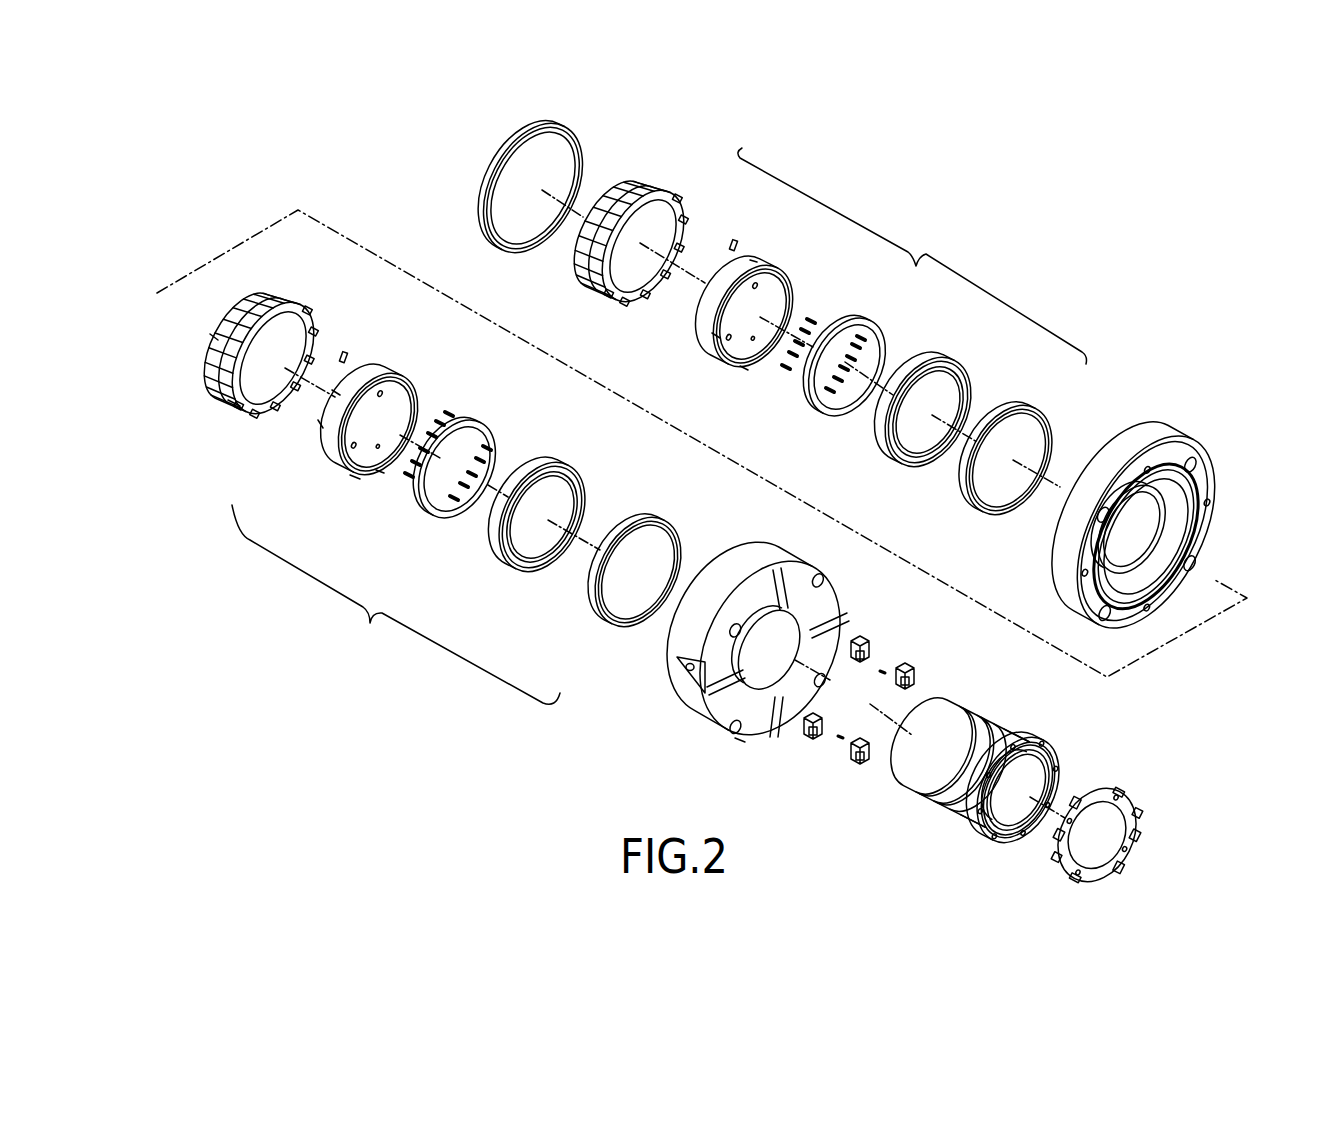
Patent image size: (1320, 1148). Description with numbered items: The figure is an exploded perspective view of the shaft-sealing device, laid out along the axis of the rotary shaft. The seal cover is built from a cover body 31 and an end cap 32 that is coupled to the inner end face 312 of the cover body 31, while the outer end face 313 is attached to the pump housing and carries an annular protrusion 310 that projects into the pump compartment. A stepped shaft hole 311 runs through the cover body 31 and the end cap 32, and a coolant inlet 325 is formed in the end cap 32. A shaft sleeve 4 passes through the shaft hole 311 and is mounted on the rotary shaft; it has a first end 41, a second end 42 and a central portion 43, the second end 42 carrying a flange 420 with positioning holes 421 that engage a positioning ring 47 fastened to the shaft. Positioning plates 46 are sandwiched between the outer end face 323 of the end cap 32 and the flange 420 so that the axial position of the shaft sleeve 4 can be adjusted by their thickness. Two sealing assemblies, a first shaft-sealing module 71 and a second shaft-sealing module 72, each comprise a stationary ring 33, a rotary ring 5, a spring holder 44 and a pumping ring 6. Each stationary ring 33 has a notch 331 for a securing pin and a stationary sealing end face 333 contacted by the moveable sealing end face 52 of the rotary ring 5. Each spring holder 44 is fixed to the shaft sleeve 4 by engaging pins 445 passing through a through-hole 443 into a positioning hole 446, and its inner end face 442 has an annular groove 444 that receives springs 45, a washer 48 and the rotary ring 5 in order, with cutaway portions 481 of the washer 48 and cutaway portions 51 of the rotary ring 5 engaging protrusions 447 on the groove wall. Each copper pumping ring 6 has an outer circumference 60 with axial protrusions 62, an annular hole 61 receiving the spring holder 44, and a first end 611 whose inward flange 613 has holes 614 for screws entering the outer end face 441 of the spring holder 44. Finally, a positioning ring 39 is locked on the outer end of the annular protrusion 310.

The shaft sleeve 4 is at (1013, 741).
The rotary ring 5 is at (565, 473).
The pumping ring 6 is at (250, 305).
The cover body 31 is at (1205, 489).
The end cap 32 is at (833, 598).
The stationary ring 33 is at (658, 526).
The positioning ring 39 is at (490, 171).
The first end 41 is at (943, 702).
The second end 42 is at (961, 813).
The central portion 43 is at (961, 723).
The spring holder 44 is at (372, 367).
The springs 45 is at (826, 296).
The positioning plates 46 is at (859, 770).
The positioning ring 47 is at (455, 412).
The washer 48 is at (478, 423).
The cutaway portions 51 is at (516, 512).
The moveable sealing end face 52 is at (545, 576).
The outer circumference 60 is at (242, 333).
The annular hole 61 is at (250, 355).
The protrusions 62 is at (299, 300).
The first shaft-sealing module 71 is at (396, 604).
The second shaft-sealing module 72 is at (912, 256).
The annular protrusion 310 is at (1066, 526).
The shaft hole 311 is at (1150, 521).
The inner end face 312 is at (1180, 454).
The outer end face 313 is at (1095, 453).
The outer end face 323 is at (762, 736).
The coolant inlet 325 is at (686, 670).
The notch 331 is at (633, 632).
The stationary sealing end face 333 is at (605, 590).
The flange 420 is at (1002, 846).
The positioning holes 421 is at (1060, 769).
The outer end face 441 is at (320, 425).
The inner end face 442 is at (400, 373).
The through-hole 443 is at (335, 392).
The annular groove 444 is at (356, 478).
The engaging pins 445 is at (343, 350).
The positioning hole 446 is at (978, 728).
The protrusions 447 is at (380, 474).
The cutaway portions 481 is at (492, 440).
The first end 611 is at (212, 338).
The flange 613 is at (261, 413).
The holes 614 is at (230, 402).